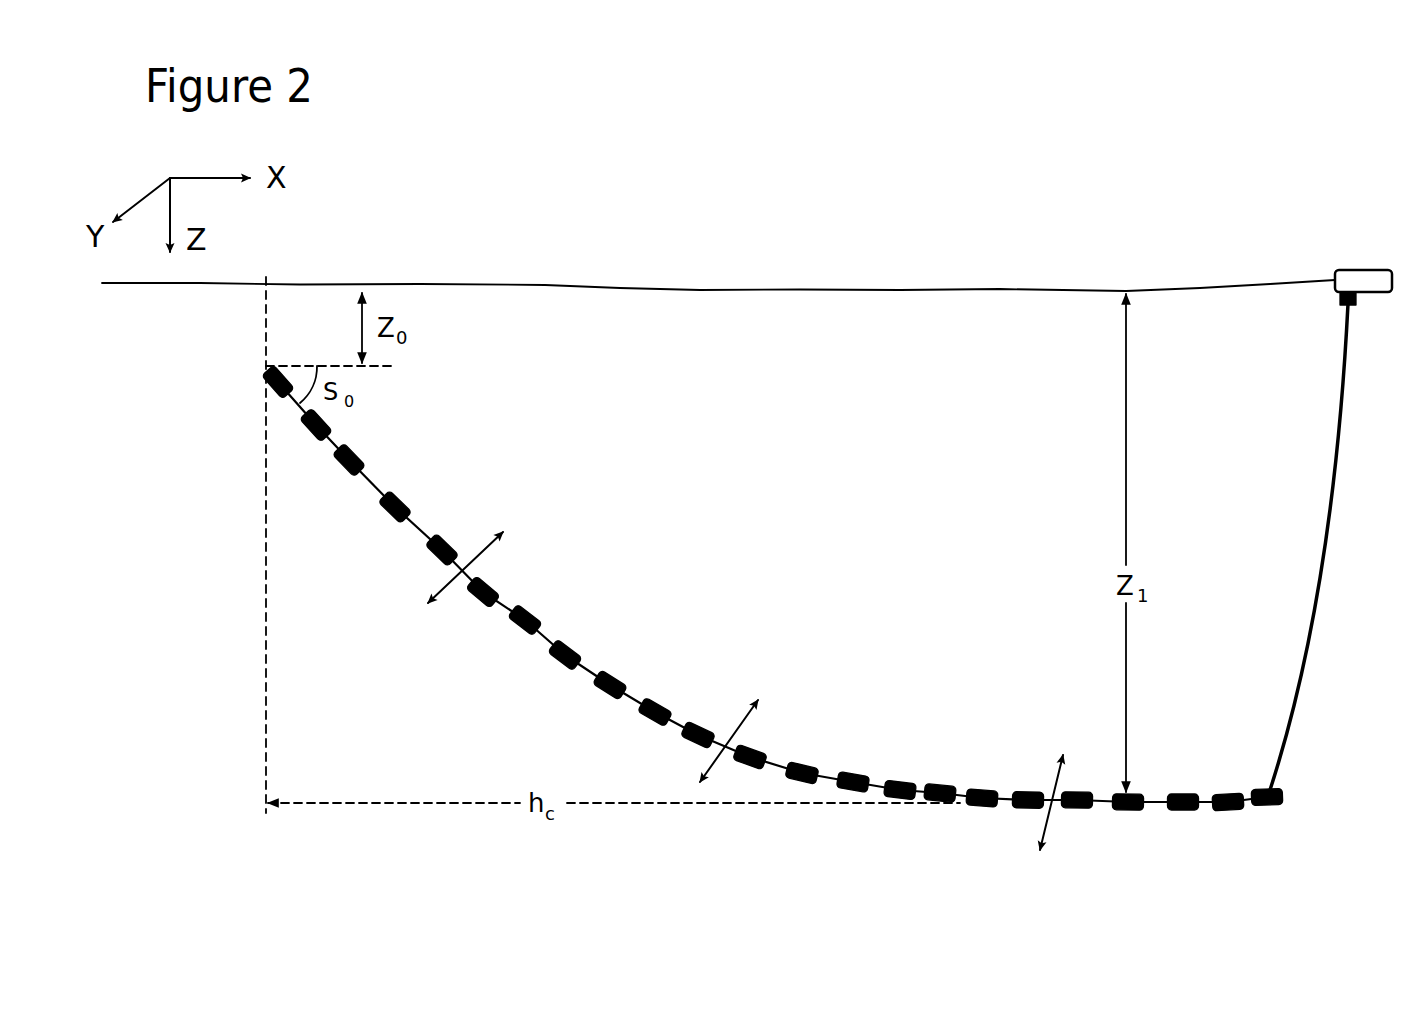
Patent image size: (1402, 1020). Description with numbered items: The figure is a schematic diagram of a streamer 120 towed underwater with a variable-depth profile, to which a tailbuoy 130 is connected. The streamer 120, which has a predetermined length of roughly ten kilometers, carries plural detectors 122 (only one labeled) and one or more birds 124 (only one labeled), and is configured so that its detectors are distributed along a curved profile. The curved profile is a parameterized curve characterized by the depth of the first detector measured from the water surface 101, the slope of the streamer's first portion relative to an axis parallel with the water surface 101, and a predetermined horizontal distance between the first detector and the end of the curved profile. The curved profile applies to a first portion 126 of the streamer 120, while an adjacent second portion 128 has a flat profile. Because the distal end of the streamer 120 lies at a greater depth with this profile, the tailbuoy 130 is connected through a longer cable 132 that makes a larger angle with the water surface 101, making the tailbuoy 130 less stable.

The water surface 101 is at (544, 284).
The streamer 120 is at (772, 622).
The detector 122 is at (354, 450).
The bird 124 is at (480, 557).
The first portion of the streamer 126 is at (583, 672).
The second portion of the streamer 128 is at (1208, 803).
The tailbuoy 130 is at (1363, 268).
The cable 132 is at (1320, 522).